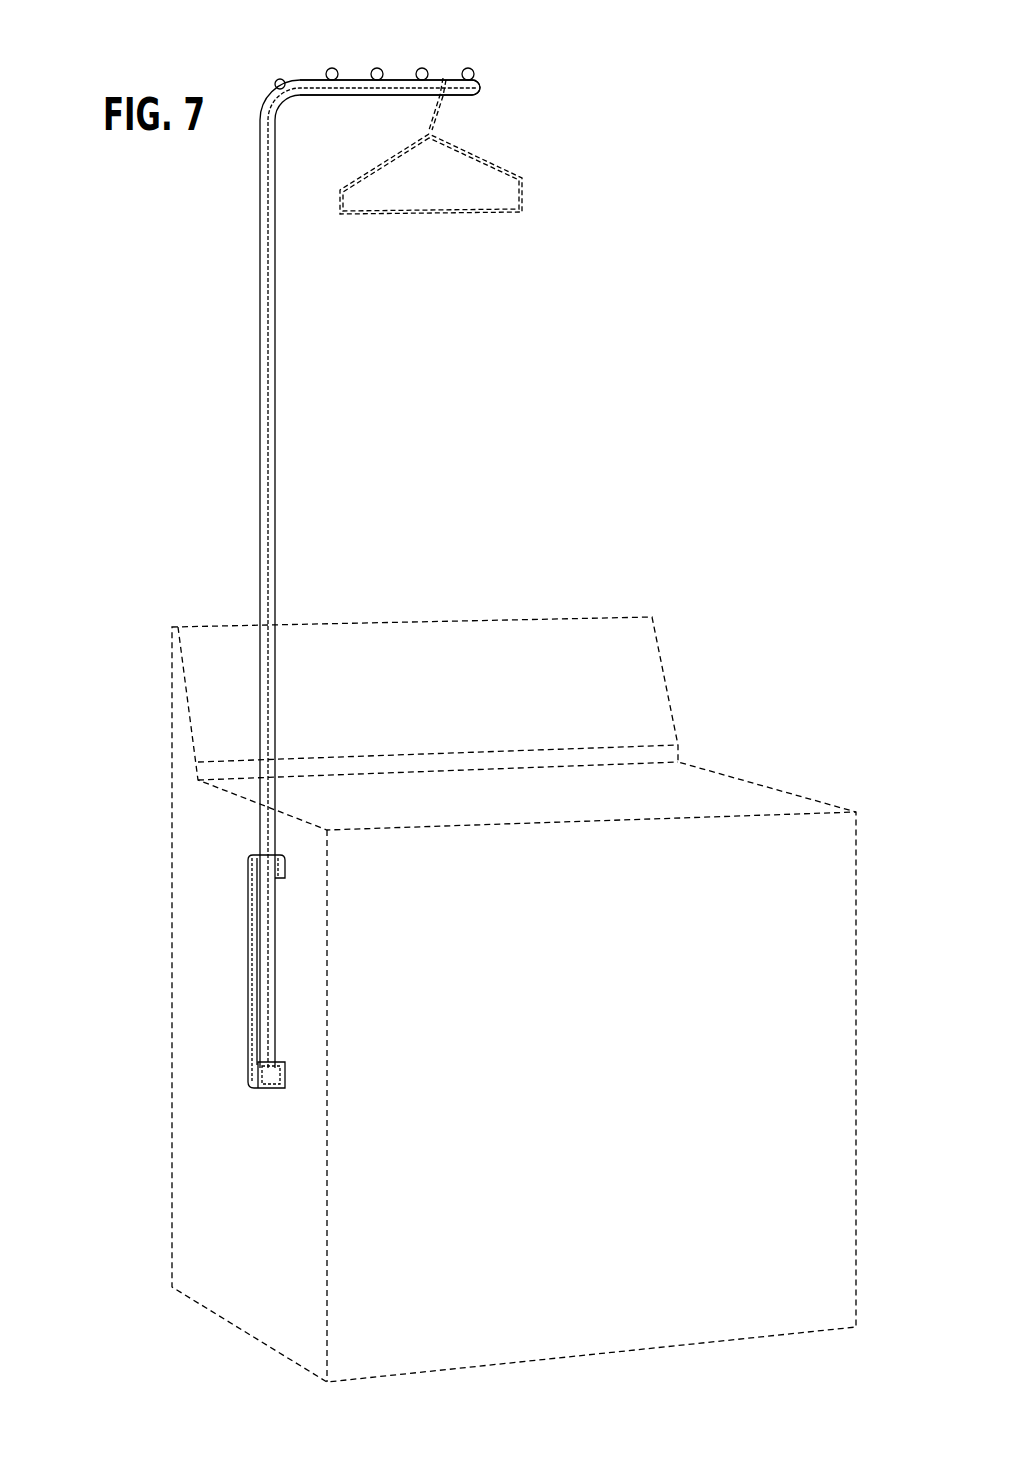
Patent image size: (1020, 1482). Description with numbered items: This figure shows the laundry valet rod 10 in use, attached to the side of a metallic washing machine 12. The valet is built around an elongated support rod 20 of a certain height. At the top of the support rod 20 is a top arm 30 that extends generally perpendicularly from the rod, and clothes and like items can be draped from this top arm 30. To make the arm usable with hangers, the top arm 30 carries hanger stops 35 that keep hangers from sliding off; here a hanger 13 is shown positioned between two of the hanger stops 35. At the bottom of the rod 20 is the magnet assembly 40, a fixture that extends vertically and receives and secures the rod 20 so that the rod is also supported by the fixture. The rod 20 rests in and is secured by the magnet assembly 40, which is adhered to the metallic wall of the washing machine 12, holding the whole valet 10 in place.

The laundry valet rod 10 is at (189, 293).
The washing machine 12 is at (185, 1068).
The hanger 13 is at (500, 165).
The support rod 20 is at (260, 495).
The top arm 30 is at (300, 97).
The hanger stops 35 is at (326, 72).
The magnet assembly 40 is at (250, 948).